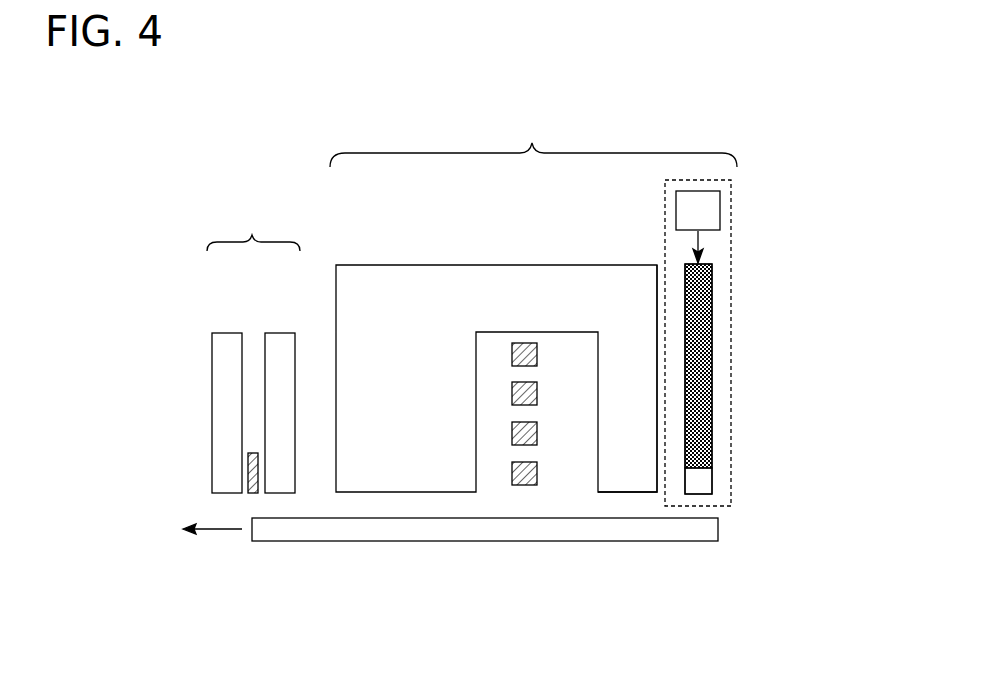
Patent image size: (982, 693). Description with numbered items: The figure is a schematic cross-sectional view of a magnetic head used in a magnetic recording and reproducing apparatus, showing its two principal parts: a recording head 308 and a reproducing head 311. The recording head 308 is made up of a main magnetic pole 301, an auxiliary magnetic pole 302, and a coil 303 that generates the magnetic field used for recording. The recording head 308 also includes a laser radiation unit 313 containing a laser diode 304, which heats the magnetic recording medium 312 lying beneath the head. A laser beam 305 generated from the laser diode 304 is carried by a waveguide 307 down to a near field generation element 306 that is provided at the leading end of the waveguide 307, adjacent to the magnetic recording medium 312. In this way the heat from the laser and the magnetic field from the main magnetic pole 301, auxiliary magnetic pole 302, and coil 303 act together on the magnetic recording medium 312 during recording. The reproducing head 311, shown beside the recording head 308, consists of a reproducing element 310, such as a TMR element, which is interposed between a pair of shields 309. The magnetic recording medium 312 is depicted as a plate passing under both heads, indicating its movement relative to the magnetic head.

The main magnetic pole 301 is at (627, 475).
The auxiliary magnetic pole 302 is at (407, 475).
The coil 303 is at (523, 343).
The laser diode 304 is at (714, 210).
The laser beam 305 is at (701, 240).
The near field generation element 306 is at (712, 481).
The waveguide 307 is at (710, 364).
The recording head 308 is at (533, 139).
The shields 309 is at (278, 337).
The reproducing element 310 is at (250, 470).
The reproducing head 311 is at (253, 225).
The magnetic recording medium 312 is at (720, 527).
The laser radiation unit 313 is at (665, 220).